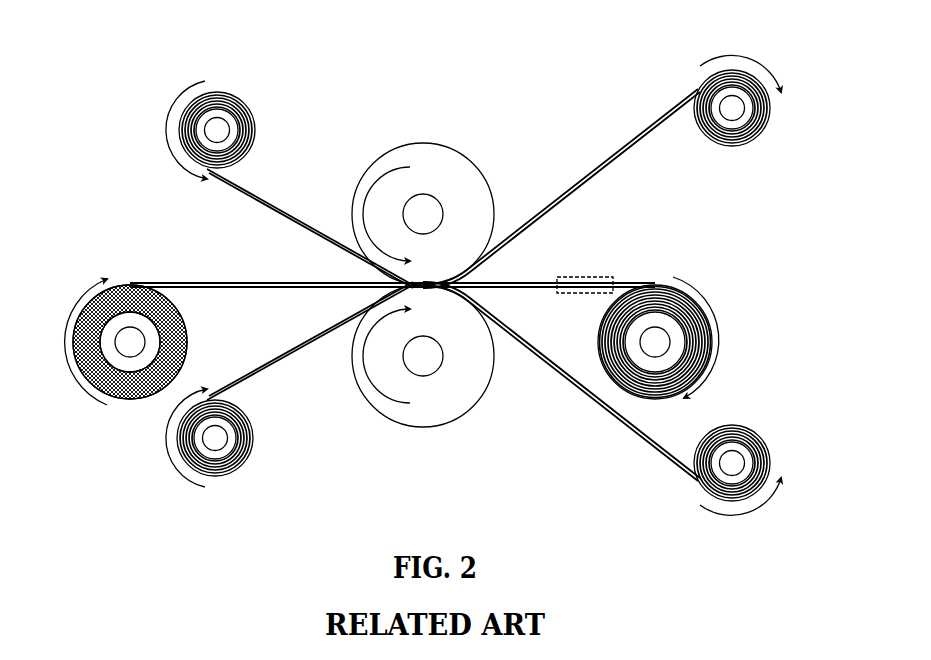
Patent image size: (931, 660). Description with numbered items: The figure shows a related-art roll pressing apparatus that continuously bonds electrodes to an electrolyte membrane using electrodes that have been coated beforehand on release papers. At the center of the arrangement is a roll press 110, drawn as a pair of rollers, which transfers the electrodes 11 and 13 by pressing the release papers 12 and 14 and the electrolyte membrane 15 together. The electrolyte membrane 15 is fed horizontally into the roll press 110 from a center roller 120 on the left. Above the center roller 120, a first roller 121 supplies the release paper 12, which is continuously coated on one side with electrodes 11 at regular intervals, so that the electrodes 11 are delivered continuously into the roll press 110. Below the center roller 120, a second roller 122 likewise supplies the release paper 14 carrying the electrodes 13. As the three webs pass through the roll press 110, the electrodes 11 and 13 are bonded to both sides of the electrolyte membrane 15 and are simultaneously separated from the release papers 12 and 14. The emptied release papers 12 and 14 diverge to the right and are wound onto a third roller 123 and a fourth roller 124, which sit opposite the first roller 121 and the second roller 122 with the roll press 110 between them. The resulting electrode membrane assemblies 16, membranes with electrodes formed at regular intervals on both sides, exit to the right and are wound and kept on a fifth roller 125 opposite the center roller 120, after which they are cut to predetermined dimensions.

The electrode 11 is at (240, 193).
The release paper 12 is at (267, 203).
The electrode 13 is at (237, 386).
The release paper 14 is at (267, 367).
The electrolyte membrane 15 is at (268, 284).
The electrode membrane assembly 16 is at (585, 277).
The roll press 110 is at (430, 205).
The center roller 120 is at (130, 345).
The first roller 121 is at (217, 128).
The second roller 122 is at (240, 468).
The third roller 123 is at (742, 112).
The fourth roller 124 is at (735, 462).
The fifth roller 125 is at (658, 332).